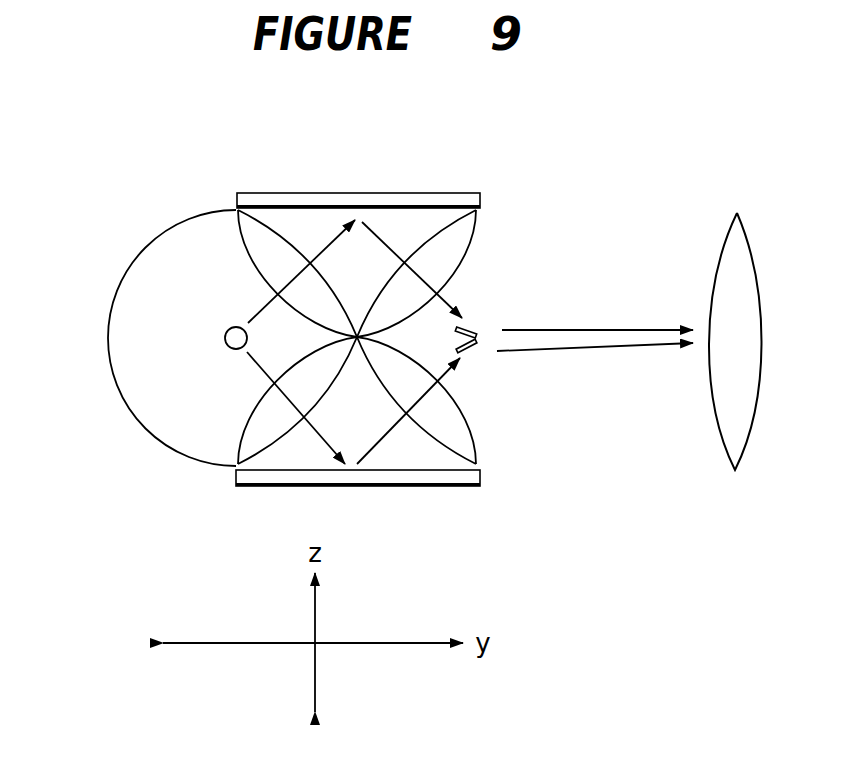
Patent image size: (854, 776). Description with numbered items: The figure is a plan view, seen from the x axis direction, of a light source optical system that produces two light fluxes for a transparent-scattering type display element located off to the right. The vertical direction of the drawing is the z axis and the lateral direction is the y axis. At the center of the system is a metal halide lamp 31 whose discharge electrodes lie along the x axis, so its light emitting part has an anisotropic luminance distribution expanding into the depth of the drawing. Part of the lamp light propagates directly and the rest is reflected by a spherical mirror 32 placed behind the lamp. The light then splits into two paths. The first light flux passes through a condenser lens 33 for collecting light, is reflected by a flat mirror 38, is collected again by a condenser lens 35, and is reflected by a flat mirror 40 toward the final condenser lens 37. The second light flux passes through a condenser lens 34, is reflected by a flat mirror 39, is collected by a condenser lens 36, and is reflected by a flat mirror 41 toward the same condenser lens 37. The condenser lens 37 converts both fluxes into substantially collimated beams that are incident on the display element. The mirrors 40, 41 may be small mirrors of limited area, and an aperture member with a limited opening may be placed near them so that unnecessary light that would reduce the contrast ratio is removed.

The metal halide lamp 31 is at (224, 334).
The spherical mirror 32 is at (109, 356).
The condenser lens 33 is at (253, 230).
The condenser lens 34 is at (224, 468).
The condenser lens 35 is at (460, 231).
The condenser lens 36 is at (457, 438).
The condenser lens 37 is at (737, 213).
The flat mirror 38 is at (282, 198).
The flat mirror 39 is at (280, 477).
The flat mirror 40 is at (475, 330).
The flat mirror 41 is at (473, 345).